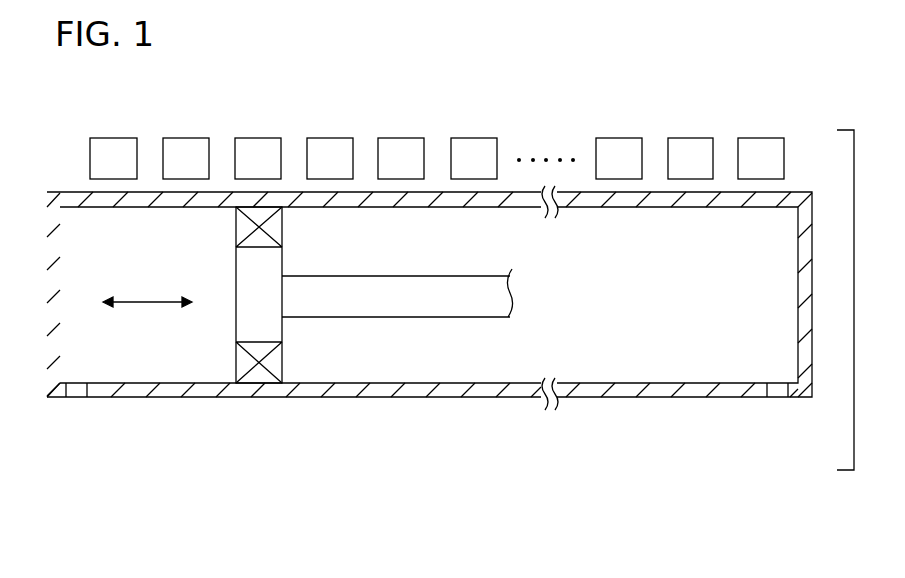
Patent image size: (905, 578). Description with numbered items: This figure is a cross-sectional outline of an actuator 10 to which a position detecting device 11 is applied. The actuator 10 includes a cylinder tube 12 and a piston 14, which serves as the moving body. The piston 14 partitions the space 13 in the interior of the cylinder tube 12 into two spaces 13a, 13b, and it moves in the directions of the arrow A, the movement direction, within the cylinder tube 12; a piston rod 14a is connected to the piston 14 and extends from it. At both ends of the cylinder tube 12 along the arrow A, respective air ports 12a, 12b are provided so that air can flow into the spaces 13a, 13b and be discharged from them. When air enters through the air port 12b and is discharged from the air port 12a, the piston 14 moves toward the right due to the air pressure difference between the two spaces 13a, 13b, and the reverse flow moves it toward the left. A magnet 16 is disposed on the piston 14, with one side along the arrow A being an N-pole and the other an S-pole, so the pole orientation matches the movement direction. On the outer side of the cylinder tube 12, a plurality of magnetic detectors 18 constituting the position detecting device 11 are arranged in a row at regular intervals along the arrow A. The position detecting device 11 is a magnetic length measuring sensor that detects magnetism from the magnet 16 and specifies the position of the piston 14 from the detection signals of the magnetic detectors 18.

The position detecting device 11 is at (498, 81).
The actuator 10 is at (123, 401).
The cylinder tube 12 is at (188, 398).
The air port 12a is at (780, 396).
The air port 12b is at (78, 398).
The space 13 is at (296, 508).
The space 13a is at (387, 358).
The space 13b is at (135, 362).
The piston 14 is at (236, 258).
The piston rod 14a is at (372, 274).
The magnet 16 is at (258, 381).
The magnetic detectors 18 is at (183, 148).
The arrow A is at (148, 297).